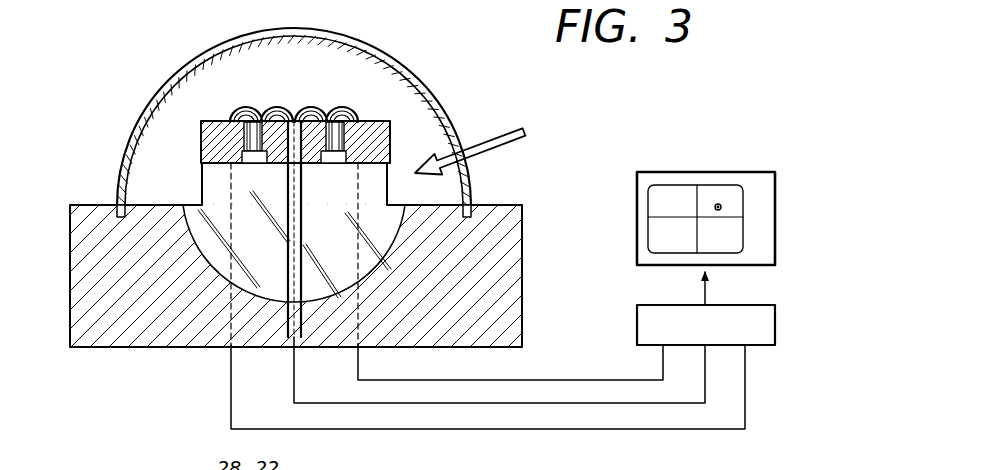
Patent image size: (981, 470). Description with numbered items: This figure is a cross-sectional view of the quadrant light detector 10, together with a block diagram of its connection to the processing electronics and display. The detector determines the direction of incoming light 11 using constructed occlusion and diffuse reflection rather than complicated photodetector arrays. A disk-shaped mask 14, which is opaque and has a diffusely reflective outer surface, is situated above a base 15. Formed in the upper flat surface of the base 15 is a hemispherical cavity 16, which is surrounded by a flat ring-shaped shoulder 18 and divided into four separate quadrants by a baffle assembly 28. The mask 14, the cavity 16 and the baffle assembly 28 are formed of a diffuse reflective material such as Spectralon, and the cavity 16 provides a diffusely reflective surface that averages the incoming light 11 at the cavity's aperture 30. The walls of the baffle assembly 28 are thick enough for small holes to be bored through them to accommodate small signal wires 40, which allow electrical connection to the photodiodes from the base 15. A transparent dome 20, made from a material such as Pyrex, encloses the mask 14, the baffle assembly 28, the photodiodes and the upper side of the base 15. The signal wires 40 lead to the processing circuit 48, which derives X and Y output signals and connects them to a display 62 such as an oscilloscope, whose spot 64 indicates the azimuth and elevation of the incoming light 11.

The quadrant light detector 10 is at (172, 61).
The incoming light 11 is at (500, 131).
The disk-shaped mask 14 is at (375, 121).
The base 15 is at (76, 290).
The hemispherical cavity 16 is at (198, 262).
The flat ring-shaped shoulder 18 is at (123, 197).
The transparent dome 20 is at (355, 46).
The baffle assembly 28 is at (220, 193).
The aperture 30 is at (398, 197).
The signal wires 40 is at (358, 363).
The processing circuit 48 is at (775, 327).
The display 62 is at (765, 232).
The spot 64 is at (721, 186).